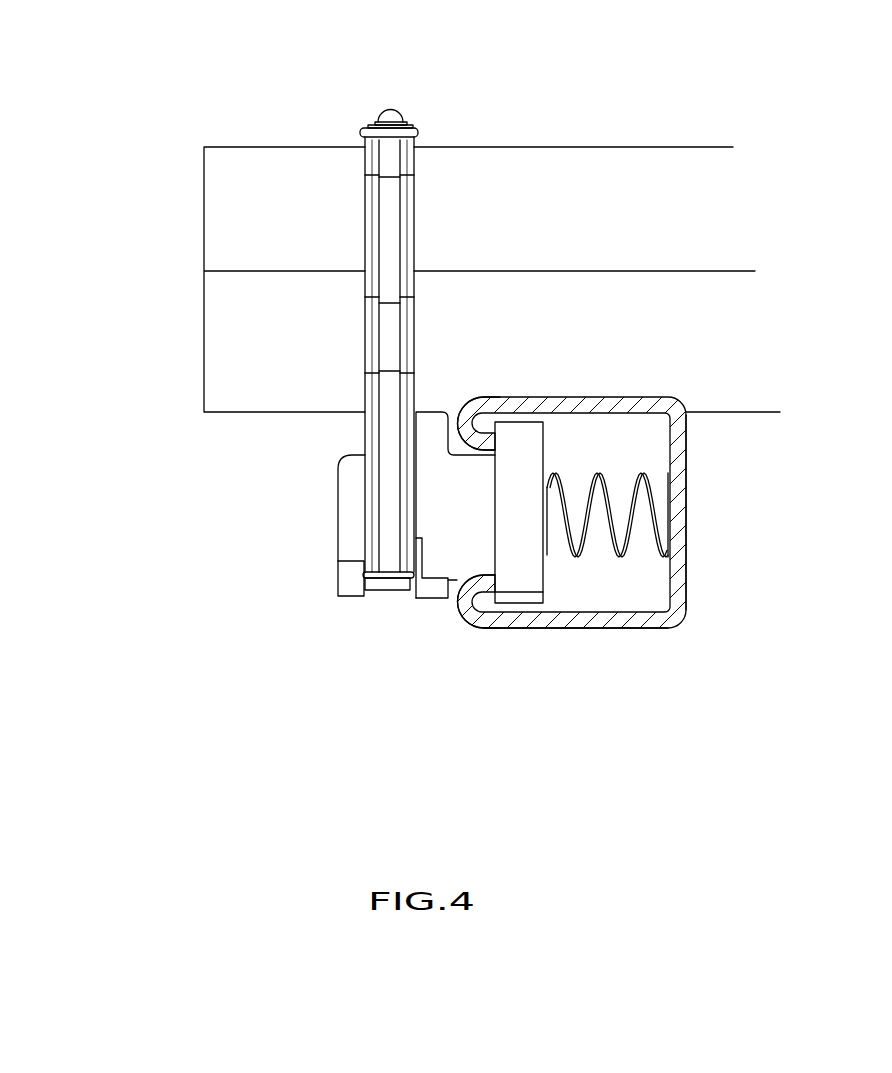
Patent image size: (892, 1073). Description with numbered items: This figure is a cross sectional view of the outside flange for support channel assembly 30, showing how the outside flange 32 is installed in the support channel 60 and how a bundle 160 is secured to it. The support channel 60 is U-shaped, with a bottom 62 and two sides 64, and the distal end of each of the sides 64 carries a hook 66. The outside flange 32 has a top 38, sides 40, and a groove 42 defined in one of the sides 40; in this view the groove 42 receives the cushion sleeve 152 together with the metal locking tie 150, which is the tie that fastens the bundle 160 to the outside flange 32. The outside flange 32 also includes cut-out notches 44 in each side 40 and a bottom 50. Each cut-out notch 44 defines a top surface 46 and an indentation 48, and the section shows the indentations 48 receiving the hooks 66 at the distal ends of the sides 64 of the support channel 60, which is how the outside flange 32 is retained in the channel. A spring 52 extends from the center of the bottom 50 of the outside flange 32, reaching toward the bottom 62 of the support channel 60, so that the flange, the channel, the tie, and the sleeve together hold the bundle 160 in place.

The outside flange for support channel assembly 30 is at (205, 530).
The outside flange 32 is at (338, 573).
The top 38 is at (338, 498).
The sides 40 is at (353, 597).
The groove 42 is at (415, 585).
The cut-out notches 44 is at (453, 583).
The top surface 46 is at (492, 598).
The indentation 48 is at (497, 442).
The bottom 50 is at (545, 448).
The spring 52 is at (653, 502).
The support channel 60 is at (687, 533).
The bottom 62 is at (687, 592).
The sides 64 is at (613, 620).
The hook 66 is at (470, 600).
The metal locking tie 150 is at (385, 106).
The cushion sleeve 152 is at (413, 162).
The bundle 160 is at (245, 321).